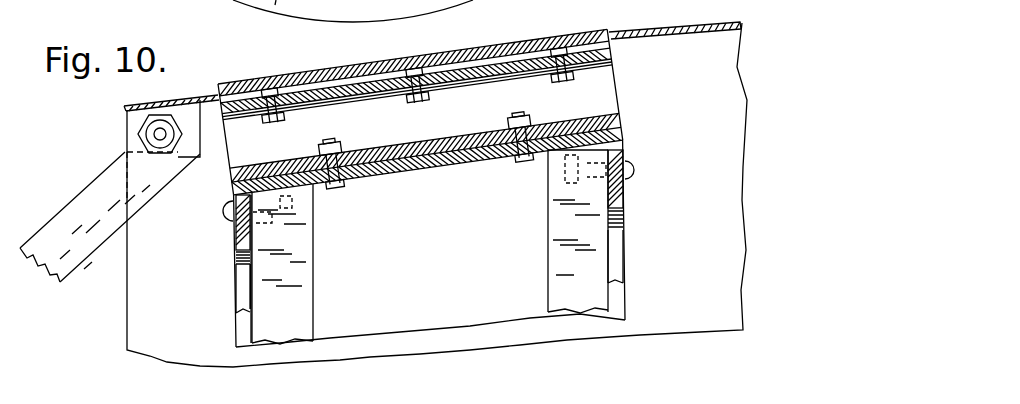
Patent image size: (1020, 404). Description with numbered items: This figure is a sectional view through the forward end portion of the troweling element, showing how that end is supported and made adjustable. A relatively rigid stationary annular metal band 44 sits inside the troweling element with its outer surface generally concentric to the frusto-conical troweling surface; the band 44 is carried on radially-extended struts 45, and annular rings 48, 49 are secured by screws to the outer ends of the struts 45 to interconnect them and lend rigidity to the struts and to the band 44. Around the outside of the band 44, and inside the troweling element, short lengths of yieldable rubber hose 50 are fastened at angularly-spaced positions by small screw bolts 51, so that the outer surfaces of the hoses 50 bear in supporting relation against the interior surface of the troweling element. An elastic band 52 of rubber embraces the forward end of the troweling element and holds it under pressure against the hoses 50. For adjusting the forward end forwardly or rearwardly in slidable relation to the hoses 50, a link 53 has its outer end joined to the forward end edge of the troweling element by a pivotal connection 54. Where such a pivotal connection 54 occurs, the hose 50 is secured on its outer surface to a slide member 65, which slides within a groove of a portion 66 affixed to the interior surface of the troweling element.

The annular metal band 44 is at (387, 178).
The radially-extended struts 45 is at (306, 305).
The annular ring 48 is at (242, 238).
The annular ring 49 is at (627, 158).
The hose length 50 is at (619, 118).
The screw bolt 51 is at (340, 148).
The elastic band 52 is at (597, 32).
The link 53 is at (82, 262).
The pivotal connection 54 is at (158, 134).
The slide member 65 is at (515, 41).
The grooved portion 66 is at (633, 42).